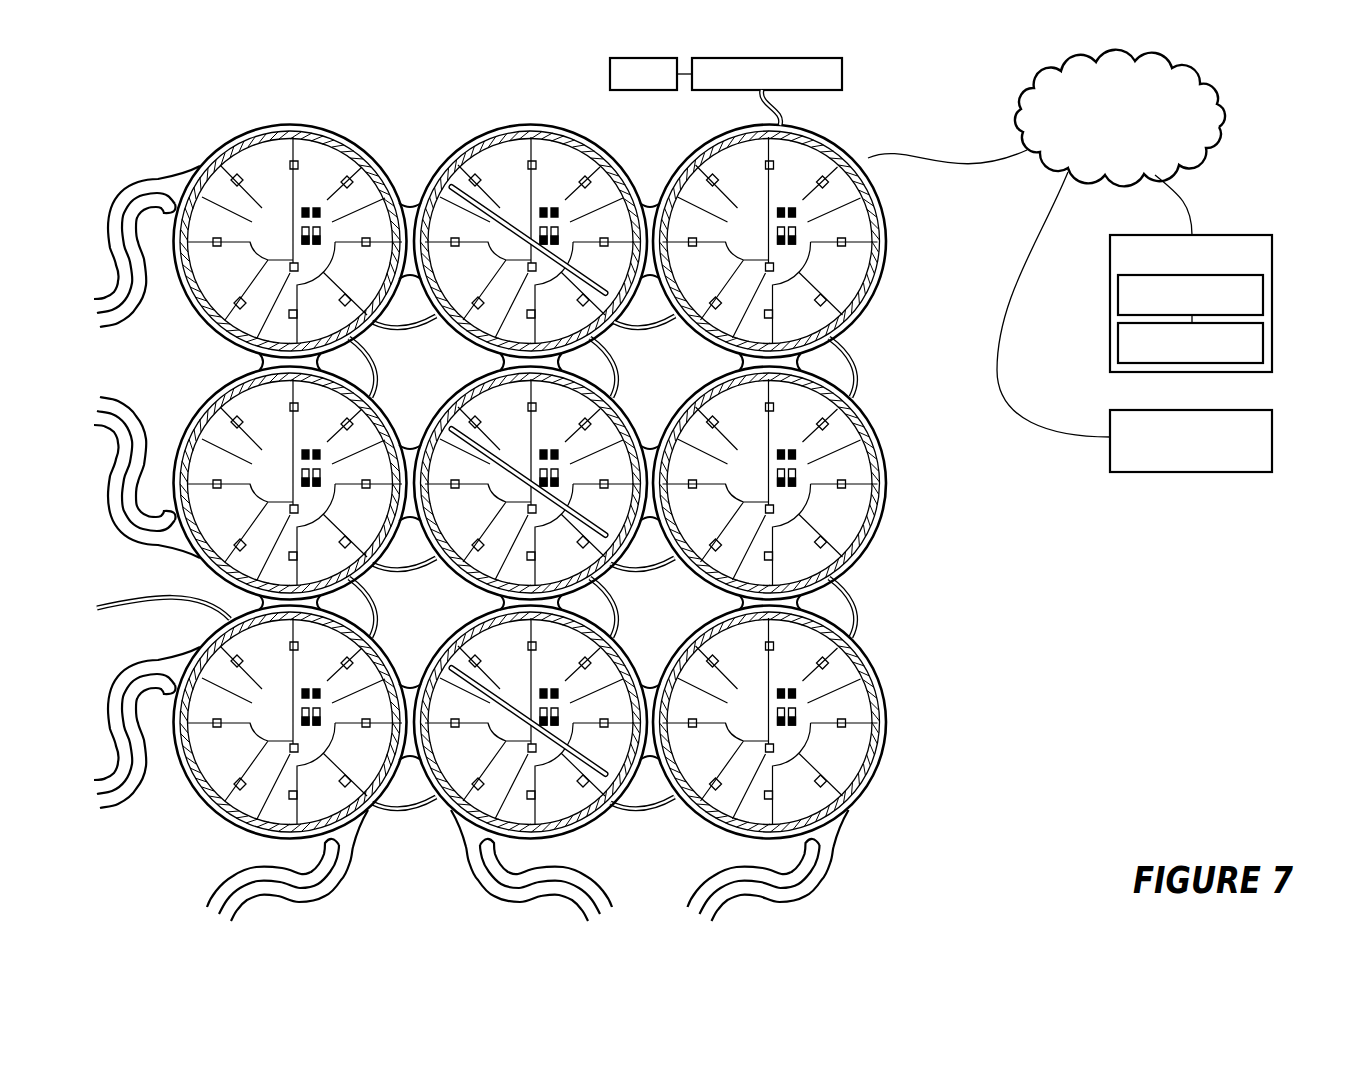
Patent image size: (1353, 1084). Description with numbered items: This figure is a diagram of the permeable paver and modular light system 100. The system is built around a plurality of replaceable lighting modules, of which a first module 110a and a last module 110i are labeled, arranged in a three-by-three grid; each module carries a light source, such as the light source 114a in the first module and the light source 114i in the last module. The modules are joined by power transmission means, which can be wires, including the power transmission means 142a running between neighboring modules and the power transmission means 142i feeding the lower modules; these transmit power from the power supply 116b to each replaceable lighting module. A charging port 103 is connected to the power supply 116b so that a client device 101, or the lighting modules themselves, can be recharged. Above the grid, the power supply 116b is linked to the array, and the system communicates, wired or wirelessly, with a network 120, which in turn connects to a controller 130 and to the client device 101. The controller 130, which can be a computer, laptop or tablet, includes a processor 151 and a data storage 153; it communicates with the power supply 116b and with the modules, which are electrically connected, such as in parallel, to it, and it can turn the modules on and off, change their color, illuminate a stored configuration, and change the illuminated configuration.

The permeable paver and modular light system 100 is at (146, 93).
The charging port 103 is at (610, 77).
The power supply 116b is at (842, 77).
The light source 114a is at (741, 168).
The replaceable lighting module 110a is at (808, 142).
The network 120 is at (1222, 110).
The controller 130 is at (1272, 257).
The processor 151 is at (1263, 297).
The data storage 153 is at (1263, 345).
The client device 101 is at (1272, 445).
The power transmission means 142a is at (640, 328).
The power transmission means 142i is at (160, 602).
The light source 114i is at (222, 768).
The replaceable lighting module 110i is at (240, 812).